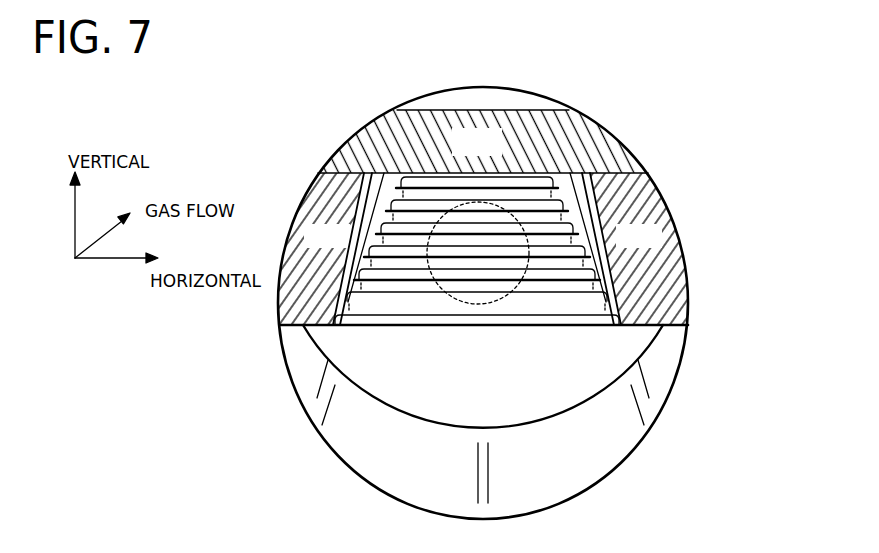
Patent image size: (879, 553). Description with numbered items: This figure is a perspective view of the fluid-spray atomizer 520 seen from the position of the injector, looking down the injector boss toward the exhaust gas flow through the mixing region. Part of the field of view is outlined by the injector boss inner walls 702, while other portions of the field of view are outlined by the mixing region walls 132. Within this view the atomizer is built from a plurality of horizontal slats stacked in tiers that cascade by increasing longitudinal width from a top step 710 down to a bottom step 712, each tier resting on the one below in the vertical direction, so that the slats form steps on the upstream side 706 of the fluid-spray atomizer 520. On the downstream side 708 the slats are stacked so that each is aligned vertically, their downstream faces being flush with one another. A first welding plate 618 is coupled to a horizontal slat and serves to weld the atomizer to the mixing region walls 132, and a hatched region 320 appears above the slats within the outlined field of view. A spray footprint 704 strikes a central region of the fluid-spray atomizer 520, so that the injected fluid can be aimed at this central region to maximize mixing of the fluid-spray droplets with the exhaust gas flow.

The mixing region walls 132 is at (572, 469).
The top cap 320 is at (496, 153).
The fluid-spray atomizer 520 is at (668, 155).
The first welding plate 618 is at (346, 244).
The injector boss inner walls 702 is at (589, 121).
The spray footprint 704 is at (463, 305).
The upstream side 706 is at (520, 346).
The downstream side 708 is at (400, 92).
The top step 710 is at (550, 180).
The bottom step 712 is at (571, 307).